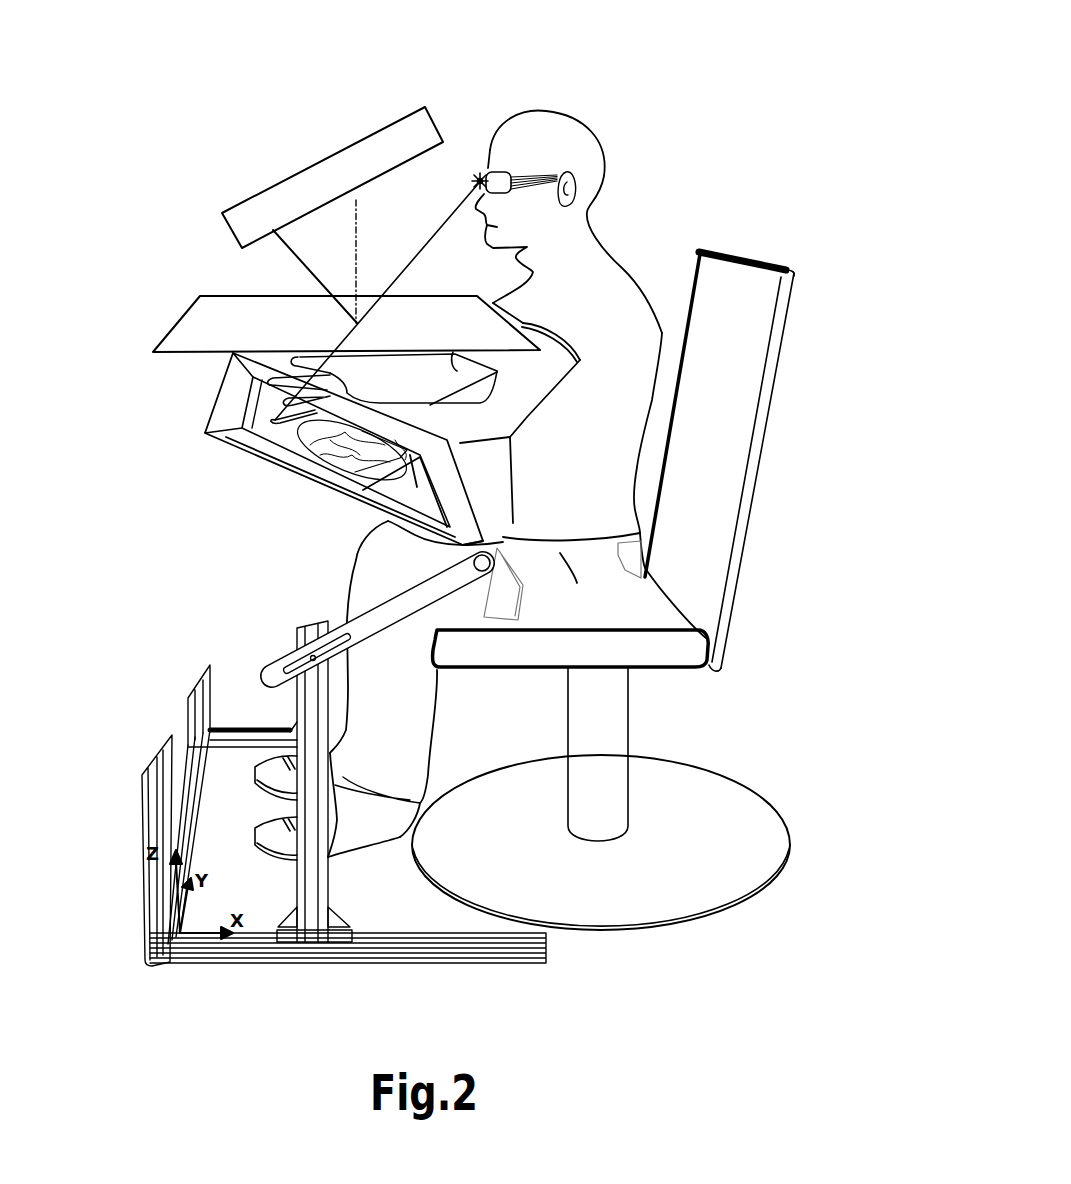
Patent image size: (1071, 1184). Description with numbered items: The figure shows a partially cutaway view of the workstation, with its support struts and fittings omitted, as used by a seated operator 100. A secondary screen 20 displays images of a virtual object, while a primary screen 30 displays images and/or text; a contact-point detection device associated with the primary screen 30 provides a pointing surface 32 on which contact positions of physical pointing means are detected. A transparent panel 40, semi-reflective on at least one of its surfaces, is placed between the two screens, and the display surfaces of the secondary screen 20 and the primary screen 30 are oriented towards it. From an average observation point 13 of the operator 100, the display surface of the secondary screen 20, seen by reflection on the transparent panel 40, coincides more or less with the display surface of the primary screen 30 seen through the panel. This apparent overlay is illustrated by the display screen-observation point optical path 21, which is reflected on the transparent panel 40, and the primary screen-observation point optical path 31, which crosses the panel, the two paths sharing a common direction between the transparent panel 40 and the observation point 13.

The observation point 13 is at (478, 181).
The secondary screen 20 is at (373, 143).
The display screen-observation point optical path 21 is at (300, 259).
The primary screen 30 is at (305, 458).
The primary screen-observation point optical path 31 is at (298, 422).
The pointing surface 32 is at (228, 408).
The transparent panel 40 is at (196, 325).
The operator 100 is at (480, 441).